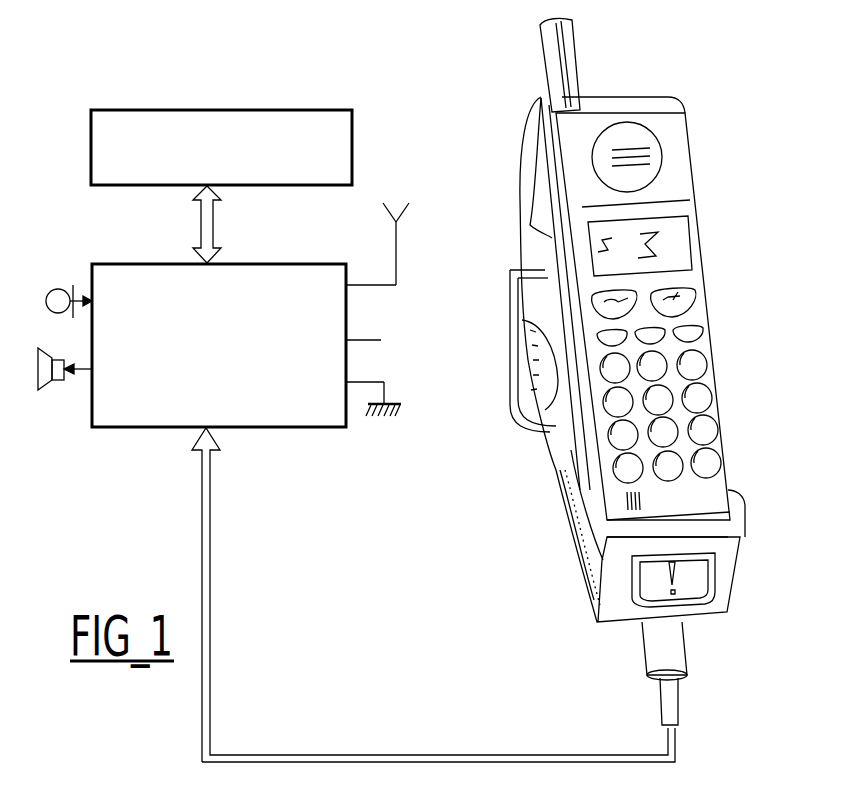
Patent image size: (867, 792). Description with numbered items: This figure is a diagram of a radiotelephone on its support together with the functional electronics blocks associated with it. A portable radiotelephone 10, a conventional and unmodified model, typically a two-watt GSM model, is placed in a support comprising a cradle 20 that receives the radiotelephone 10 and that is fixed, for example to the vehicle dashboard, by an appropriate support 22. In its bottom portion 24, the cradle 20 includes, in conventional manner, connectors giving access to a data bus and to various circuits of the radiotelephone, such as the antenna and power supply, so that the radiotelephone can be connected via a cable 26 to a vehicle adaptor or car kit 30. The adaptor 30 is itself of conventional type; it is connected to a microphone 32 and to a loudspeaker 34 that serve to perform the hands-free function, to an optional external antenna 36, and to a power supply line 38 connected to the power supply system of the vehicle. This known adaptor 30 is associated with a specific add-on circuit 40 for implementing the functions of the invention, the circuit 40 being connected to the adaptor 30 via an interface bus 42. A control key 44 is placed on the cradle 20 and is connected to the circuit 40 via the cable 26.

The portable radiotelephone 10 is at (698, 312).
The cradle 20 is at (563, 510).
The support 22 is at (527, 405).
The bottom portion 24 is at (675, 521).
The cable 26 is at (470, 752).
The vehicle adaptor 30 is at (303, 428).
The microphone 32 is at (53, 290).
The loudspeaker 34 is at (50, 395).
The external antenna 36 is at (397, 245).
The power supply line 38 is at (366, 340).
The add-on circuit 40 is at (318, 110).
The interface bus 42 is at (216, 213).
The control key 44 is at (703, 568).